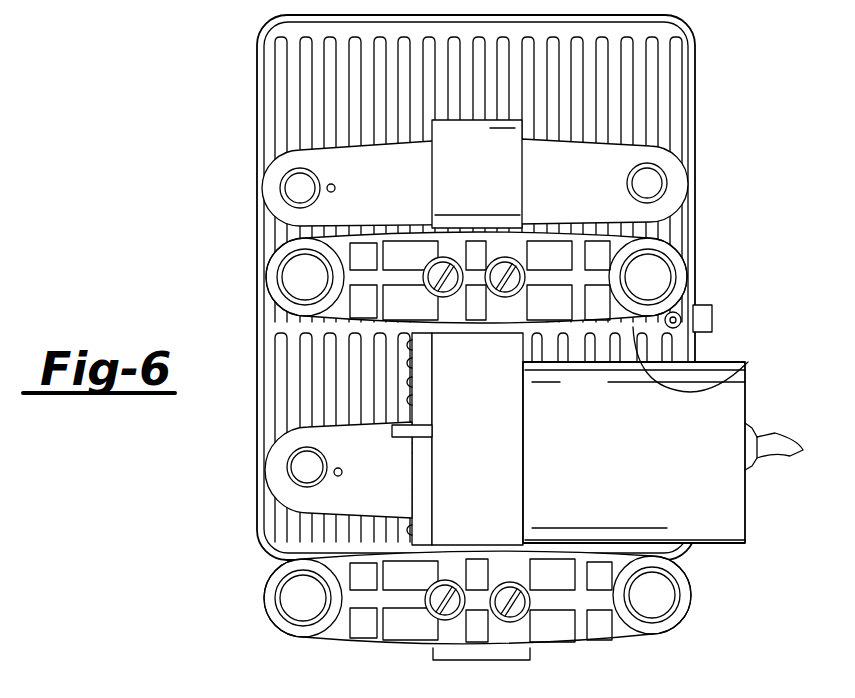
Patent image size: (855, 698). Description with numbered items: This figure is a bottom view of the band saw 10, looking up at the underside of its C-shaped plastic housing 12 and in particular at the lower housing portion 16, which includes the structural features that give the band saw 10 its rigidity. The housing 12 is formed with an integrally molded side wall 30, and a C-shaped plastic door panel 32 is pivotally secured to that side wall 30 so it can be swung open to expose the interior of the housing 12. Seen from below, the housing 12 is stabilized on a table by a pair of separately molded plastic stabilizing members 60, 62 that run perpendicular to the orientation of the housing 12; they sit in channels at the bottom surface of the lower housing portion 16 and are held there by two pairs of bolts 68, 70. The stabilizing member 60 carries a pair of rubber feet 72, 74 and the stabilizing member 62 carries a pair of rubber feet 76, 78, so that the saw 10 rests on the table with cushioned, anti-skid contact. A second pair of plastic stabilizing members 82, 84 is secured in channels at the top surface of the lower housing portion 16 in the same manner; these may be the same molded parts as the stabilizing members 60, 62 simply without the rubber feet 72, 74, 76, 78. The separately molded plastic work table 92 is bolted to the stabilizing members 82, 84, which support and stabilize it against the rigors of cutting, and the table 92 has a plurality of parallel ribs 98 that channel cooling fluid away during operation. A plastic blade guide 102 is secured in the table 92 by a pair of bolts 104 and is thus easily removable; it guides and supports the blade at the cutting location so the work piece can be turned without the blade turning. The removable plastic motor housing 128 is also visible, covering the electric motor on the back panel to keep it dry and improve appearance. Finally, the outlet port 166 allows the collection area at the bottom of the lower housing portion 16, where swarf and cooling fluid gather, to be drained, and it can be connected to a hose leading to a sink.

The band saw 10 is at (183, 219).
The housing 12 is at (523, 415).
The lower housing portion 16 is at (513, 492).
The side wall 30 is at (513, 457).
The door panel 32 is at (418, 355).
The stabilizing member 60 is at (330, 645).
The stabilizing member 62 is at (640, 233).
The bolts 68 is at (508, 588).
The bolts 70 is at (503, 263).
The rubber foot 72 is at (275, 606).
The rubber foot 74 is at (665, 603).
The rubber foot 76 is at (298, 292).
The rubber foot 78 is at (657, 281).
The stabilizing member 82 is at (327, 503).
The stabilizing member 84 is at (640, 153).
The work table 92 is at (250, 137).
The parallel ribs 98 is at (282, 75).
The blade guide 102 is at (742, 367).
The bolts 104 is at (697, 300).
The motor housing 128 is at (713, 375).
The outlet port 166 is at (412, 430).